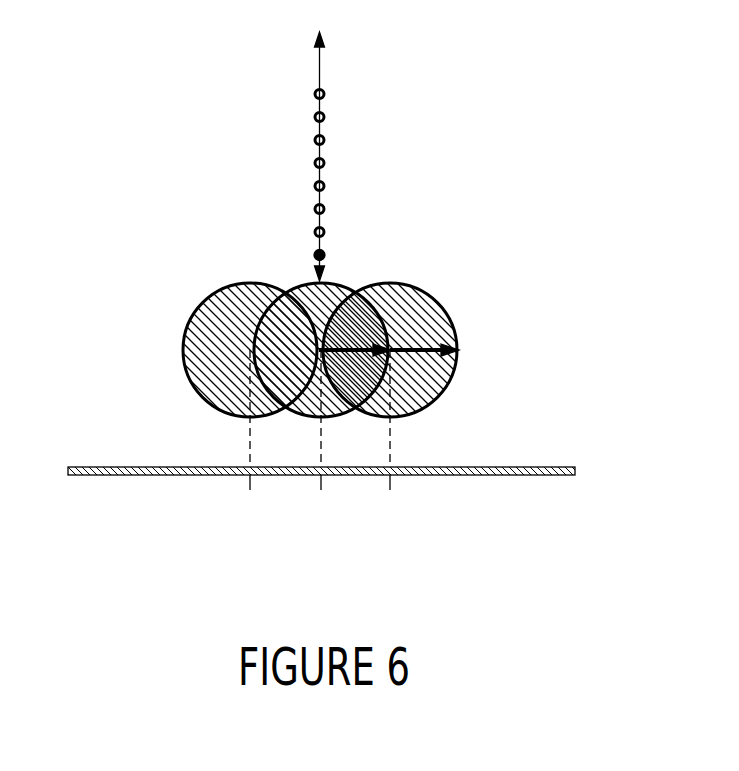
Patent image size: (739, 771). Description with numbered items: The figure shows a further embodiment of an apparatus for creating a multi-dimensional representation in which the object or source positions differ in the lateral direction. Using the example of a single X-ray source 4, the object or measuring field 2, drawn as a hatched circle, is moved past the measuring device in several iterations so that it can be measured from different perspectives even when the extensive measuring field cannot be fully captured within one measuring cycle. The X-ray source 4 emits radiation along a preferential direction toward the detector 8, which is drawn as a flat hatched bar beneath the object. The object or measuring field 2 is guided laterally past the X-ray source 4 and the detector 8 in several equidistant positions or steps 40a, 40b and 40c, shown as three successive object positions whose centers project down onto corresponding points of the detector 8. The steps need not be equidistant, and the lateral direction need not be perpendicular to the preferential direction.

The measuring field 2 is at (300, 282).
The X-ray source 4 is at (322, 259).
The detector 8 is at (468, 473).
The position 40a is at (250, 482).
The position 40b is at (322, 482).
The position 40c is at (391, 482).